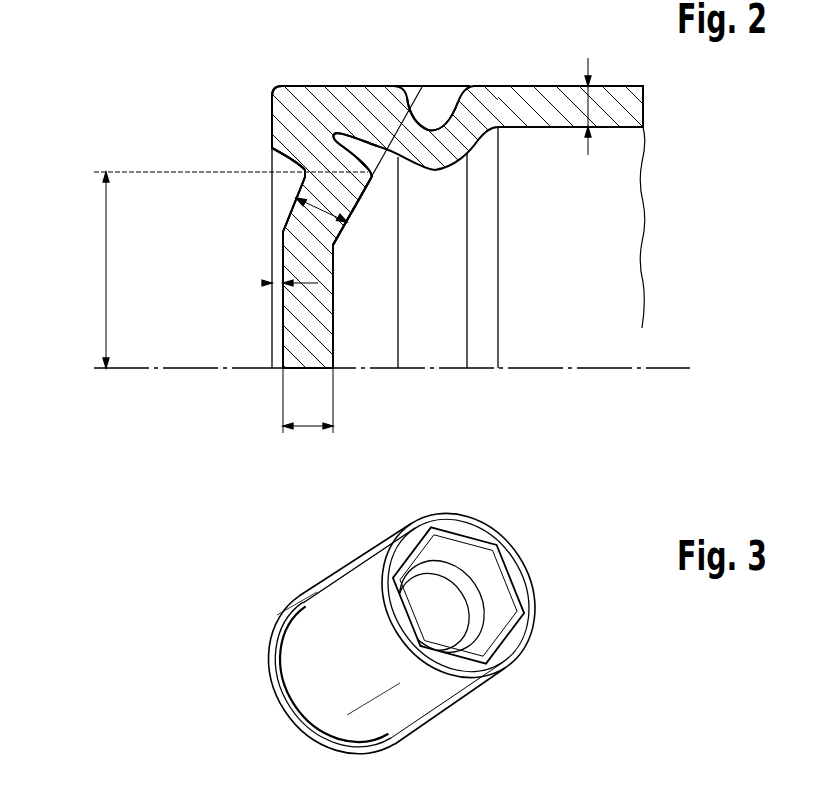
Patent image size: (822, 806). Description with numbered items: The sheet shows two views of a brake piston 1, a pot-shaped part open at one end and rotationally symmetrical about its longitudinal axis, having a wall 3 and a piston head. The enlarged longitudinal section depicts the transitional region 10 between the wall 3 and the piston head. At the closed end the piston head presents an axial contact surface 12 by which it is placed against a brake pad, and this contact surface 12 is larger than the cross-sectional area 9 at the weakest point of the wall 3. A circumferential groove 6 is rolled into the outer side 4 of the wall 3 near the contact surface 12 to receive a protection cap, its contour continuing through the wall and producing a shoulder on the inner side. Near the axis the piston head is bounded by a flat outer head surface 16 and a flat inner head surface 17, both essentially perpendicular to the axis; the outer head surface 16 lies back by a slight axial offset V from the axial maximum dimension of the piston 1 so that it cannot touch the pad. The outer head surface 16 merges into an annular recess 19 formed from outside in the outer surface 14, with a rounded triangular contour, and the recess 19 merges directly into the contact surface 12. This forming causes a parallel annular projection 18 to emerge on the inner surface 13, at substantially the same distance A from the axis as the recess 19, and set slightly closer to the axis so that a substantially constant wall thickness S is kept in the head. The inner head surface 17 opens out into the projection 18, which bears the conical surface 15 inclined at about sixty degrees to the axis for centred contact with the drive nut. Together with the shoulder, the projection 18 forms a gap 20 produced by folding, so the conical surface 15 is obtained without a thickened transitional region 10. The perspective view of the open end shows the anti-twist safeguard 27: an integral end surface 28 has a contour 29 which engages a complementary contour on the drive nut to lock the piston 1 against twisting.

In FIG. 2, the piston 1 is at (431, 43).
In FIG. 3, the piston 1 is at (262, 600).
In FIG. 3, the wall 3 is at (345, 649).
In FIG. 2, the outer side 4 is at (288, 80).
In FIG. 2, the circumferential groove 6 is at (432, 113).
In FIG. 3, the circumferential groove 6 is at (292, 682).
In FIG. 2, the cross-sectional area 9 is at (587, 60).
In FIG. 2, the transitional region 10 is at (172, 55).
In FIG. 2, the contact surface 12 is at (270, 126).
In FIG. 2, the inner surface 13 is at (350, 260).
In FIG. 2, the outer surface 14 is at (266, 328).
In FIG. 2, the conical surface 15 is at (385, 176).
In FIG. 3, the conical surface 15 is at (410, 602).
In FIG. 2, the outer head surface 16 is at (278, 352).
In FIG. 2, the inner head surface 17 is at (342, 325).
In FIG. 2, the projection 18 is at (353, 190).
In FIG. 2, the recess 19 is at (296, 181).
In FIG. 2, the gap 20 is at (356, 147).
In FIG. 3, the anti-twist safeguard 27 is at (532, 547).
In FIG. 3, the end surface 28 is at (467, 528).
In FIG. 3, the contour 29 is at (513, 593).
In FIG. 2, the distance A is at (106, 267).
In FIG. 2, the wall thickness S is at (353, 190).
In FIG. 2, the axial offset V is at (262, 283).